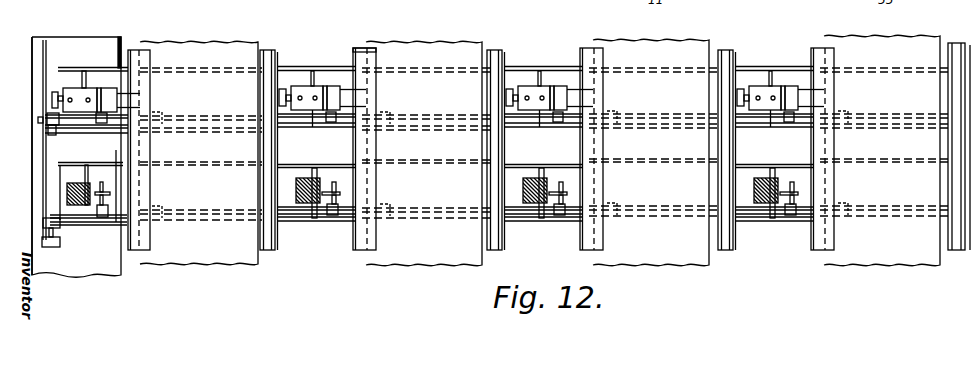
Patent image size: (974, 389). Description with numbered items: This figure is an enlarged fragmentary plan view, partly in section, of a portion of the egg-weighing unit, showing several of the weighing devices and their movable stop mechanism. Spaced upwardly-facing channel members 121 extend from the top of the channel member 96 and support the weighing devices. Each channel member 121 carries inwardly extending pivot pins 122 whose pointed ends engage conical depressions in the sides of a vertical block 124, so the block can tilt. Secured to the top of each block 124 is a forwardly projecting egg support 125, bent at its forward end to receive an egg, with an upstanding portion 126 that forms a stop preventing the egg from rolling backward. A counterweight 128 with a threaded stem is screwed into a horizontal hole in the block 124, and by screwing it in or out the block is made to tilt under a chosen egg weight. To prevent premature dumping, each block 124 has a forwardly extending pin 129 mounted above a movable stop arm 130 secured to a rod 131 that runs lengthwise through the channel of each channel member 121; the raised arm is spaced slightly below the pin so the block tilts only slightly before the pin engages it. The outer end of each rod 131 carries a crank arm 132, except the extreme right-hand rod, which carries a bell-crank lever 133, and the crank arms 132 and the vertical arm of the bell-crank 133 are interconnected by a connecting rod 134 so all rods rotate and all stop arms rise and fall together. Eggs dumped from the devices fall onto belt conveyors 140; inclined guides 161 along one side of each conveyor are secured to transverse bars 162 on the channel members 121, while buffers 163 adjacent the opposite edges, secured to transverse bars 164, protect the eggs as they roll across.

The channel member 96 is at (92, 272).
The channel member 121 is at (290, 66).
The pivot pin 122 is at (316, 167).
The vertical block 124 is at (296, 190).
The egg support 125 is at (343, 86).
The upstanding portion 126 is at (334, 88).
The counterweight 128 is at (283, 89).
The pin 129 is at (328, 218).
The movable stop arm 130 is at (342, 179).
The rod 131 is at (295, 123).
The crank arm 132 is at (47, 120).
The bell-crank lever 133 is at (42, 241).
The connecting rod 134 is at (32, 72).
The belt conveyor 140 is at (428, 41).
The inclined guide 161 is at (376, 53).
The transverse bar 162 is at (355, 48).
The buffer 163 is at (258, 50).
The transverse bar 164 is at (278, 52).